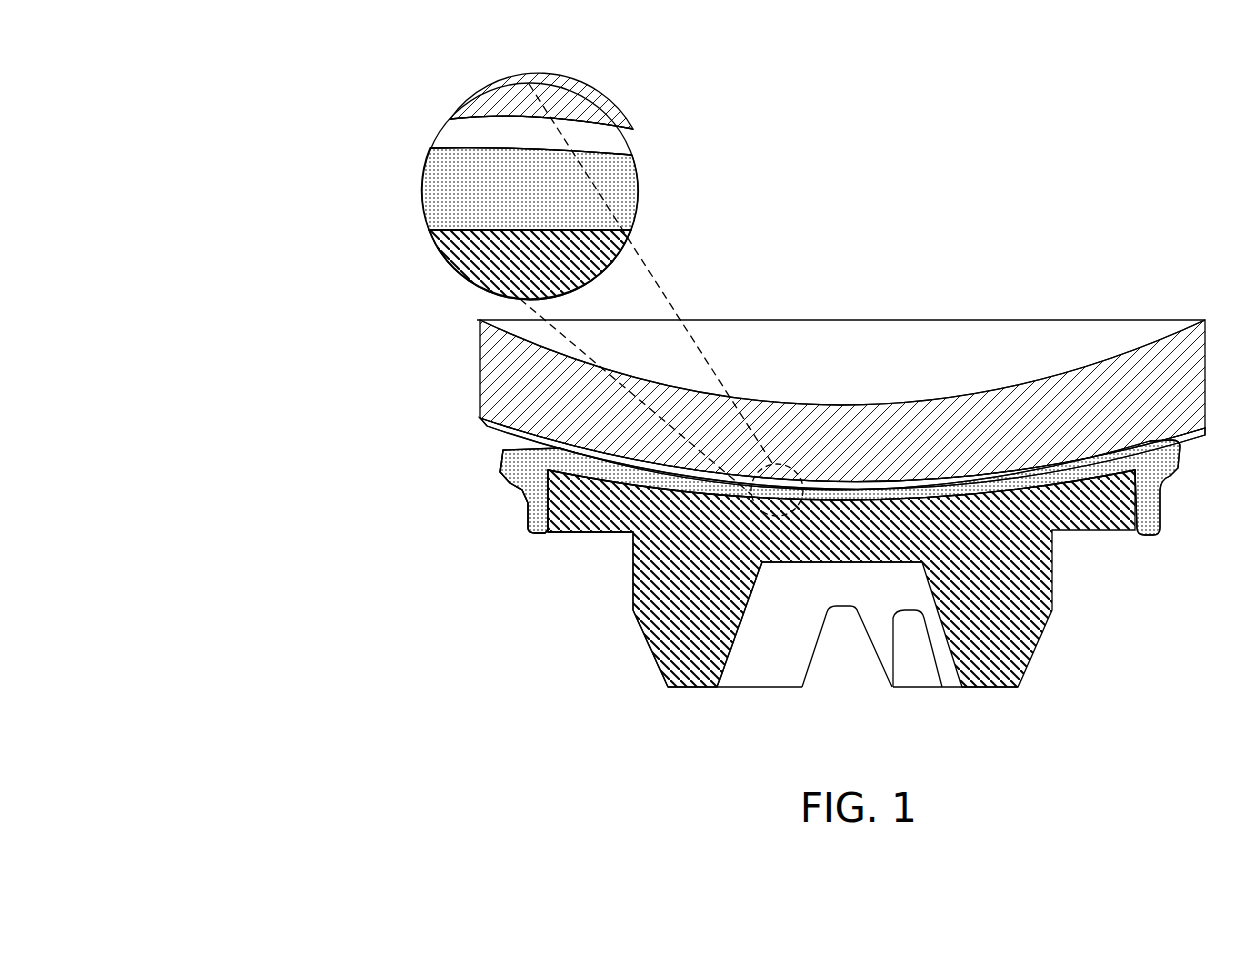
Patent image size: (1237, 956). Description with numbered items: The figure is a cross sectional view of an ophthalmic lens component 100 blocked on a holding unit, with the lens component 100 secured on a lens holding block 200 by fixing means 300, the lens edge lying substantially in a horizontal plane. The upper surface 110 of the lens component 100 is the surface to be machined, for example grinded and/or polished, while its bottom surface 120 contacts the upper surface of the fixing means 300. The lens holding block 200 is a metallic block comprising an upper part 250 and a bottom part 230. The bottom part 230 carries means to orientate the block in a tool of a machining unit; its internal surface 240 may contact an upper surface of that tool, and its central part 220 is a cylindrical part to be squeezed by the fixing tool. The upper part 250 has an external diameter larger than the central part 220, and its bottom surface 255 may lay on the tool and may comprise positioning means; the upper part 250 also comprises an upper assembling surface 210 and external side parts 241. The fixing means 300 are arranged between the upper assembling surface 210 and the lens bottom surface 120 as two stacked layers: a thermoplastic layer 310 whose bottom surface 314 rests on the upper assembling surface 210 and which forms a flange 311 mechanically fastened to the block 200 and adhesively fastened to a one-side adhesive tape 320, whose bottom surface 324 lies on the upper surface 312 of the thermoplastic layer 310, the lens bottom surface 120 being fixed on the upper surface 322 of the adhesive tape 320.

The ophthalmic lens component 100 is at (603, 110).
The upper surface 110 is at (1127, 354).
The bottom surface 120 is at (494, 96).
The lens holding block 200 is at (358, 835).
The upper assembling surface 210 is at (465, 249).
The central part 220 is at (586, 572).
The bottom part 230 is at (462, 722).
The internal surface 240 is at (795, 567).
The external side parts 241 is at (535, 505).
The upper part 250 is at (628, 247).
The bottom surface 255 is at (590, 532).
The fixing means 300 is at (785, 183).
The thermoplastic layer 310 is at (623, 187).
The flange 311 is at (522, 483).
The upper surface 312 is at (470, 168).
The bottom surface 314 is at (428, 230).
The one-side adhesive tape 320 is at (613, 140).
The upper surface 322 is at (452, 120).
The bottom surface 324 is at (428, 148).